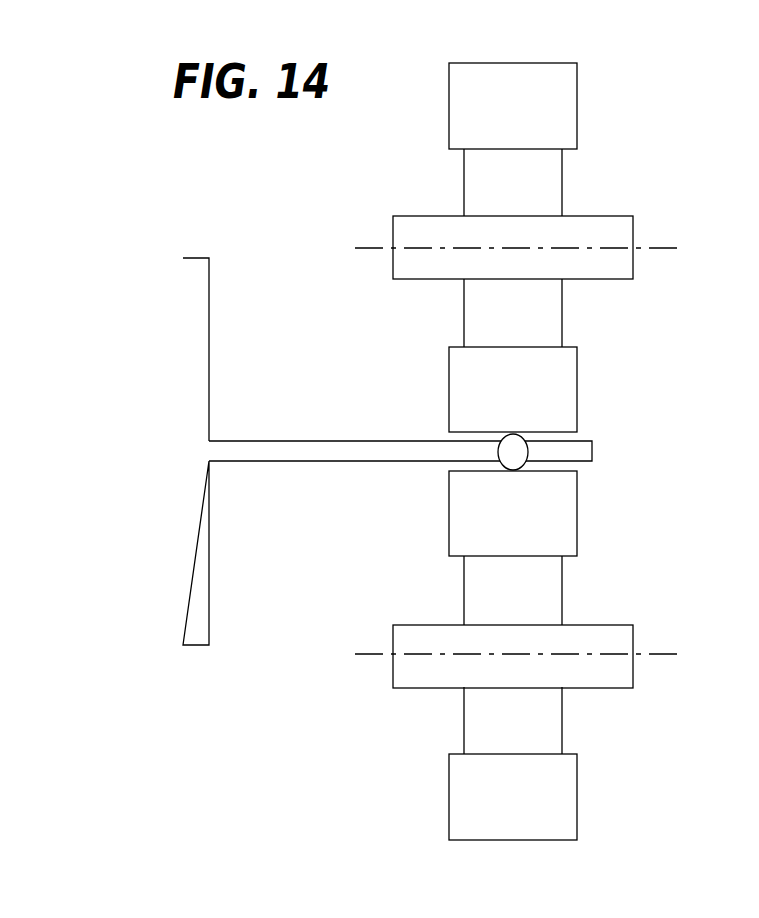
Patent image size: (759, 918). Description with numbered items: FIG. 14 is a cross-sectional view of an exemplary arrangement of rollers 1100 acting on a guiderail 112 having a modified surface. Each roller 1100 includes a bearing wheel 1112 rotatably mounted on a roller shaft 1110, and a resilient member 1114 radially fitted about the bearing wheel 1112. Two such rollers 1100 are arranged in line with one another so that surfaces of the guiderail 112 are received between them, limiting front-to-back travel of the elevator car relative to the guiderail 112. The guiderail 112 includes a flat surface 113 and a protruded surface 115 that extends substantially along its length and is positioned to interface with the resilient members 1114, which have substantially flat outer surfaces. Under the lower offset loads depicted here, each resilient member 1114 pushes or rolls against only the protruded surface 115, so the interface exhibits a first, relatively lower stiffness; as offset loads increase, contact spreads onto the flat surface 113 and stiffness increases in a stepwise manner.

The roller 1100 is at (347, 152).
The resilient member 1114 is at (540, 102).
The bearing wheel 1112 is at (530, 180).
The roller shaft 1110 is at (622, 232).
The guiderail 112 is at (195, 527).
The flat surface 113 is at (430, 435).
The protruded surface 115 is at (523, 470).